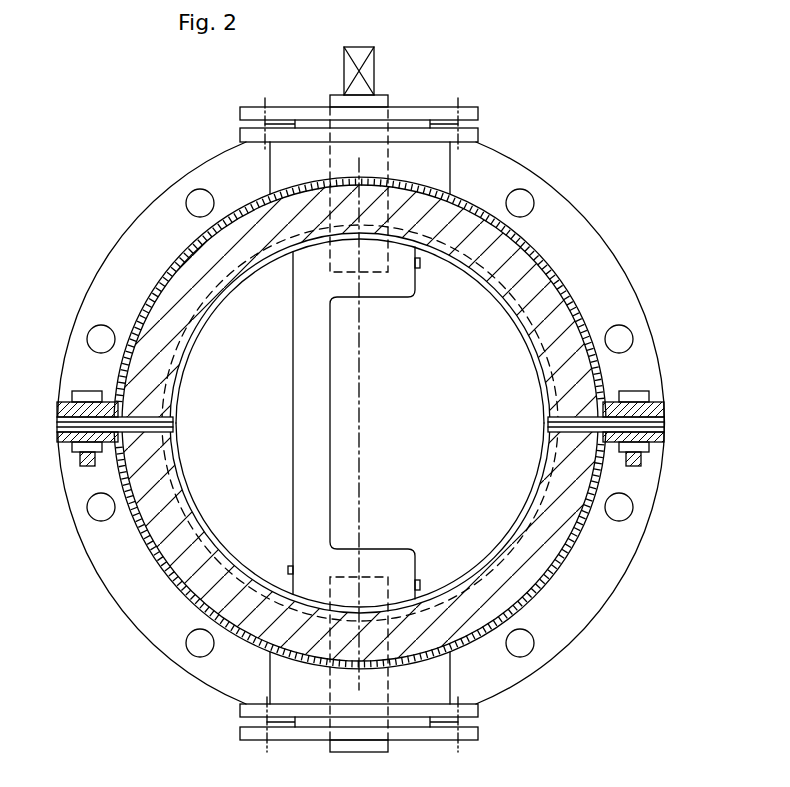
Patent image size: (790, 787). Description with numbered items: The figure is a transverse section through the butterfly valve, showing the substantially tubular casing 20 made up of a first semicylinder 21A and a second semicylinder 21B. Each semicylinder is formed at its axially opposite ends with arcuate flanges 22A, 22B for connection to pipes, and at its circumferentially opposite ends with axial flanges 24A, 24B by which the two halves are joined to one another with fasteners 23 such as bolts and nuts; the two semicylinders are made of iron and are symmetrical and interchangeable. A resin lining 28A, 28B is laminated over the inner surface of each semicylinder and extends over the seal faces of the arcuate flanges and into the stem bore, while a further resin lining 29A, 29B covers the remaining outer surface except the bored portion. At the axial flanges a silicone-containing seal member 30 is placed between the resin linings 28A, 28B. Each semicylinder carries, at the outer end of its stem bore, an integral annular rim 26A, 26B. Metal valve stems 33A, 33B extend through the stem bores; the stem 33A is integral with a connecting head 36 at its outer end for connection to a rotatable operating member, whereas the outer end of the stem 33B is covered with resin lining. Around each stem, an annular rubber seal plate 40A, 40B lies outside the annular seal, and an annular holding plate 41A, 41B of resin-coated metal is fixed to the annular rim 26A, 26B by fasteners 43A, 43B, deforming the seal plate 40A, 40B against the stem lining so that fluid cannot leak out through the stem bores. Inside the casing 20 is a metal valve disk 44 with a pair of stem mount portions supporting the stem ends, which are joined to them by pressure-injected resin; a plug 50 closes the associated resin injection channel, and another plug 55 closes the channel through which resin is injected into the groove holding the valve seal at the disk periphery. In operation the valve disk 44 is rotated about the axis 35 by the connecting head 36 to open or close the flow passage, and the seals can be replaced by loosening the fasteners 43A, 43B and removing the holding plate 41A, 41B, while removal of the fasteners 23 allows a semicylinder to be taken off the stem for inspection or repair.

The tubular casing 20 is at (148, 557).
The first semicylinder 21A is at (540, 298).
The second semicylinder 21B is at (535, 588).
The arcuate flange 22A is at (123, 268).
The arcuate flange 22B is at (158, 637).
The fasteners 23 is at (76, 462).
The axial flange 24A is at (57, 400).
The axial flange 24B is at (60, 443).
The annular rim 26A is at (480, 140).
The annular rim 26B is at (478, 708).
The resin lining 28A is at (208, 312).
The resin lining 28B is at (484, 562).
The resin lining 29A is at (185, 248).
The resin lining 29B is at (572, 558).
The seal member 30 is at (173, 437).
The valve stem 33A is at (392, 106).
The valve stem 33B is at (392, 752).
The axis 35 is at (360, 370).
The connecting head 36 is at (366, 52).
The rubber seal plate 40A is at (305, 118).
The rubber seal plate 40B is at (312, 728).
The holding plate 41A is at (480, 113).
The holding plate 41B is at (478, 740).
The fasteners 43A is at (460, 104).
The fasteners 43B is at (267, 746).
The valve disk 44 is at (316, 465).
The plug 50 is at (420, 270).
The plug 55 is at (287, 568).